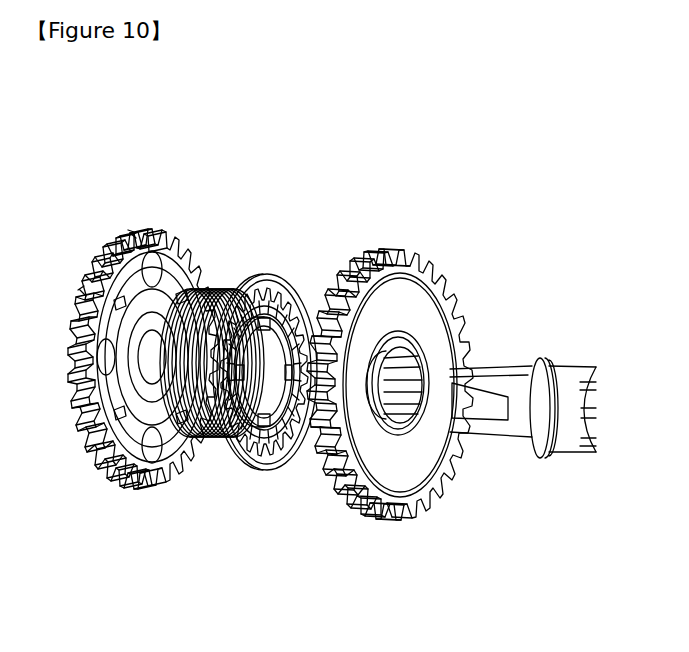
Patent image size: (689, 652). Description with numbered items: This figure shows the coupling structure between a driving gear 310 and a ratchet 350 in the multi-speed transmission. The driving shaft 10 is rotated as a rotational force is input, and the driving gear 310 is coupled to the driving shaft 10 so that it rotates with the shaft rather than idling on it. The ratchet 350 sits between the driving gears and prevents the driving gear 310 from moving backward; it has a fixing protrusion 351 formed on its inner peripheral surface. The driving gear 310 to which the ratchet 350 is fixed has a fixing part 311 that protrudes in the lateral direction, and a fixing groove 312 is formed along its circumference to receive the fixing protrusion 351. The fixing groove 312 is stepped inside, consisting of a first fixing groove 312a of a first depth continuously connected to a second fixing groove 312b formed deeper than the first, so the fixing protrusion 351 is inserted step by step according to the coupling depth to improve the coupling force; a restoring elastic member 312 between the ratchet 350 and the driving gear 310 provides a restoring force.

The driving shaft 10 is at (556, 433).
The driving gear 310 is at (393, 245).
The fixing part 311 is at (80, 437).
The fixing groove 312 is at (193, 447).
The first fixing groove 312a is at (130, 233).
The second fixing groove 312b is at (80, 290).
The ratchet 350 is at (262, 470).
The fixing protrusion 351 is at (275, 443).